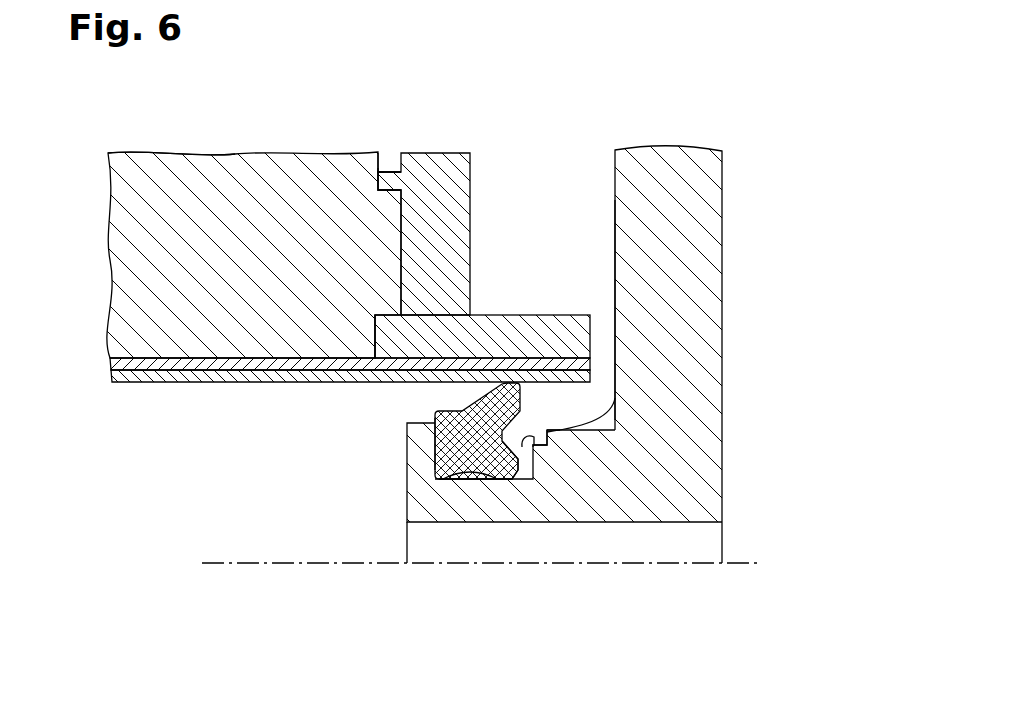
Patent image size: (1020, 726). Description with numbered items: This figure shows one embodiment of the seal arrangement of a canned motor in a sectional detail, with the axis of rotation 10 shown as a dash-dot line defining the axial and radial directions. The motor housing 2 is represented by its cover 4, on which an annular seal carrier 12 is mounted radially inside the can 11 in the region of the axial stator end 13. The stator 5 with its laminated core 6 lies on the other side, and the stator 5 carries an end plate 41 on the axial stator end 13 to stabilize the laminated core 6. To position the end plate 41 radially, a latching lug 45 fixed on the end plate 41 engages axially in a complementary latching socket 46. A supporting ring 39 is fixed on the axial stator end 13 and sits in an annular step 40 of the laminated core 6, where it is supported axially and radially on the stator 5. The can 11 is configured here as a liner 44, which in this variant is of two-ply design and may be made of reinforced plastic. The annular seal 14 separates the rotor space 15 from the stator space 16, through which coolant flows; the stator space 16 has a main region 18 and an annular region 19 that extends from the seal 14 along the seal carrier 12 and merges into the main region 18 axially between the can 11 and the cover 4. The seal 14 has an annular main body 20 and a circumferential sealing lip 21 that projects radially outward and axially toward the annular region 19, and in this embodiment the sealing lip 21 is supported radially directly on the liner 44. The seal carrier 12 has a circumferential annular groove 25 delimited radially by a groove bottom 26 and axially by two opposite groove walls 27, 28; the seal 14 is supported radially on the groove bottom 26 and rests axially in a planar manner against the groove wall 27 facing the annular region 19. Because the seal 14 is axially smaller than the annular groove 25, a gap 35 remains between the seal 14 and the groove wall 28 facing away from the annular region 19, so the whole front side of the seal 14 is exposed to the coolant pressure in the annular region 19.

The motor housing 2 is at (728, 220).
The cover 4 is at (688, 188).
The stator 5 is at (123, 156).
The laminated core 6 is at (183, 178).
The axis of rotation 10 is at (330, 566).
The can 11 is at (148, 372).
The seal carrier 12 is at (612, 530).
The axial stator end 13 is at (386, 160).
The seal 14 is at (431, 462).
The rotor space 15 is at (306, 468).
The stator space 16 is at (586, 245).
The main region 18 is at (572, 277).
The annular region 19 is at (557, 410).
The main body 20 is at (452, 455).
The sealing lip 21 is at (542, 392).
The annular groove 25 is at (466, 486).
The groove bottom 26 is at (497, 465).
The groove wall 27 is at (437, 452).
The groove wall 28 is at (550, 432).
The gap 35 is at (523, 468).
The supporting ring 39 is at (502, 332).
The annular step 40 is at (390, 320).
The end plate 41 is at (433, 178).
The liner 44 is at (208, 385).
The latching lug 45 is at (378, 168).
The latching socket 46 is at (375, 180).